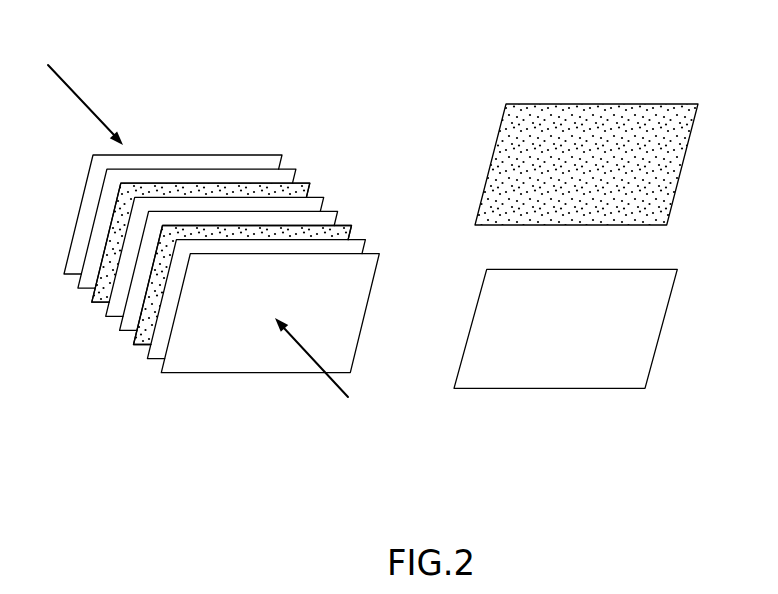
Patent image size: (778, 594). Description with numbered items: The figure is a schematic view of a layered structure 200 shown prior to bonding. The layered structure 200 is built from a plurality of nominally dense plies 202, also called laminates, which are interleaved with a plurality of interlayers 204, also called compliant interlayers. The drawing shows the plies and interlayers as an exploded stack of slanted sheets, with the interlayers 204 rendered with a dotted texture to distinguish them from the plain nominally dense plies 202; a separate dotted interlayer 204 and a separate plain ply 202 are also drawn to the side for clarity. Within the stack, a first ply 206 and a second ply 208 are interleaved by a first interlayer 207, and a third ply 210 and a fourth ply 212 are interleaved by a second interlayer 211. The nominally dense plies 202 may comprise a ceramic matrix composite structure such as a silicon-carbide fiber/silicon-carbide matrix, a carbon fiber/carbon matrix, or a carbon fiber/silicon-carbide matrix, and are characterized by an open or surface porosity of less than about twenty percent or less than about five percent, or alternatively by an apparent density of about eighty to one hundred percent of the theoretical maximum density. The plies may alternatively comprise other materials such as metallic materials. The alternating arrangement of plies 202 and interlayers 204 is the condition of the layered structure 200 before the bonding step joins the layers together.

The layered structure 200 is at (190, 115).
The nominally dense plies 202 is at (64, 274).
The interlayers 204 is at (92, 302).
The first ply 206 is at (291, 171).
The first interlayer 207 is at (303, 185).
The second ply 208 is at (314, 199).
The third ply 210 is at (326, 213).
The second interlayer 211 is at (344, 227).
The fourth ply 212 is at (361, 241).